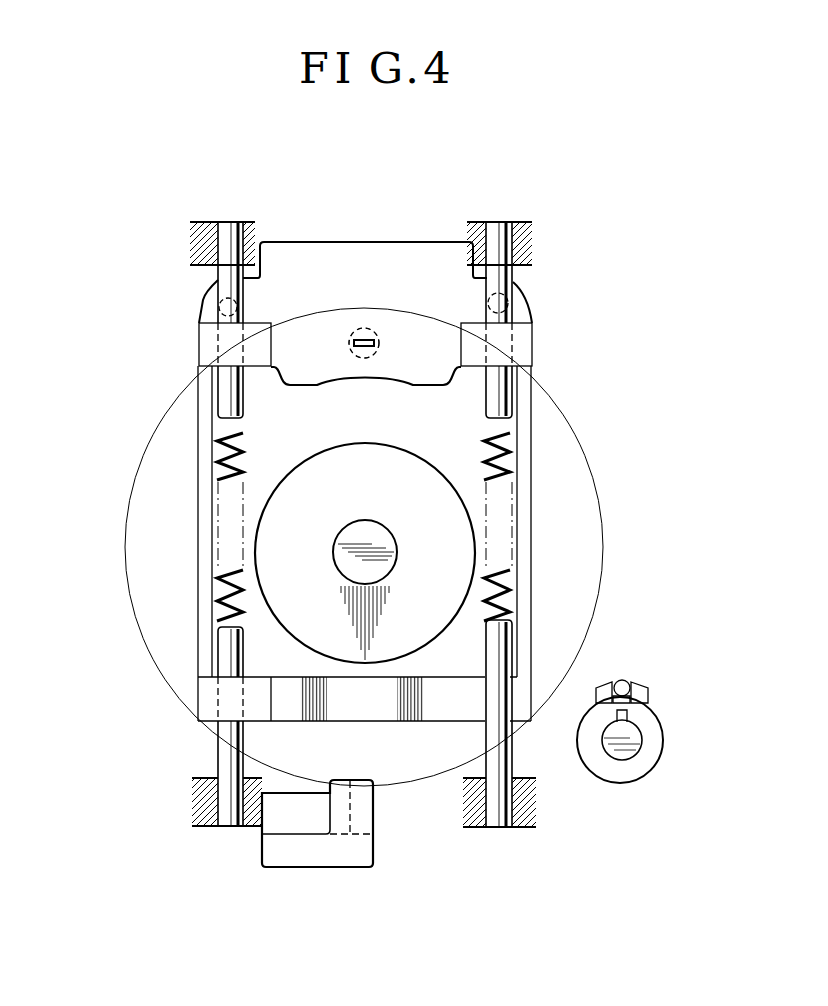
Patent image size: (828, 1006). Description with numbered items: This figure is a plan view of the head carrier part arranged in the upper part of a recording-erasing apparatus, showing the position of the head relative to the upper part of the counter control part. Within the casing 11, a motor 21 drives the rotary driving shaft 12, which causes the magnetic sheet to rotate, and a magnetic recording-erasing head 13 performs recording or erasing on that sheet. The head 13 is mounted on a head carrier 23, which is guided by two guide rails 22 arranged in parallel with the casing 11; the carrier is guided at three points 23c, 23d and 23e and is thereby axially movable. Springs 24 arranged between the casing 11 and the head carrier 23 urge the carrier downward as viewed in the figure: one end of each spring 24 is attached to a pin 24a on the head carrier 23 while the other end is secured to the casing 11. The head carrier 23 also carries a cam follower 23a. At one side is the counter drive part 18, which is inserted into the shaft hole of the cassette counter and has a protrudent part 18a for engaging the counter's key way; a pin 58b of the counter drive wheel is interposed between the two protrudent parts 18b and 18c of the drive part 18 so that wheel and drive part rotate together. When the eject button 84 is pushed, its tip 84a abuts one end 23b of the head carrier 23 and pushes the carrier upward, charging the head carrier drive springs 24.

The casing 11 is at (192, 240).
The rotary driving shaft 12 is at (393, 535).
The magnetic recording-erasing head 13 is at (372, 333).
The drive part 18 is at (648, 696).
The protrudent part 18a is at (630, 712).
The protrudent part 18b is at (603, 682).
The protrudent part 18c is at (645, 690).
The motor 21 is at (427, 468).
The guide rails 22 is at (222, 759).
The head carrier 23 is at (348, 502).
The cam follower 23a is at (364, 328).
The one end of the head carrier 23b is at (430, 716).
The guide point 23c is at (527, 335).
The guide point 23d is at (208, 349).
The guide point 23e is at (200, 695).
The springs 24 is at (218, 598).
The pins 24a is at (221, 305).
The pin 58b is at (626, 680).
The eject button 84 is at (342, 856).
The tip of the eject button 84a is at (373, 786).